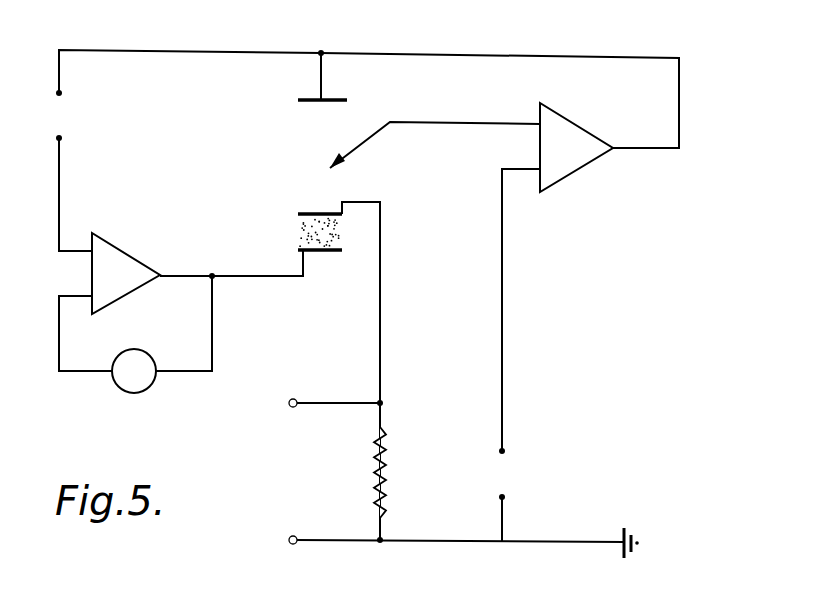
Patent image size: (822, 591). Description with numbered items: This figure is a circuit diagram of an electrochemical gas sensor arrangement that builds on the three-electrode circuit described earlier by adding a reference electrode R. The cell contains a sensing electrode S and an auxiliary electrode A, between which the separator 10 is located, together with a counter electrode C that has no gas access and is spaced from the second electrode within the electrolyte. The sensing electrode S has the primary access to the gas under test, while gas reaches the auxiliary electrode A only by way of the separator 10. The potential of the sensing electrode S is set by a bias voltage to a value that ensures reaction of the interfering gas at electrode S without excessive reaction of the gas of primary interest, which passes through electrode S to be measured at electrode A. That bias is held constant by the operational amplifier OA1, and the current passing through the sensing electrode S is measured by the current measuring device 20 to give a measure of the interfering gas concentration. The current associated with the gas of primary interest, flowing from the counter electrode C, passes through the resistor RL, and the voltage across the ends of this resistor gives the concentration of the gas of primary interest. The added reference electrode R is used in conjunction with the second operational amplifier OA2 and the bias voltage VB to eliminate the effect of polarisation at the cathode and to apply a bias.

The separator 10 is at (338, 241).
The current measuring device 20 is at (138, 378).
The auxiliary electrode A is at (312, 213).
The sensing electrode S is at (337, 252).
The counter electrode C is at (332, 101).
The reference electrode R is at (359, 146).
The resistor RL is at (374, 472).
The bias voltage VB is at (514, 355).
The operational amplifier OA1 is at (126, 273).
The second operational amplifier OA2 is at (576, 147).